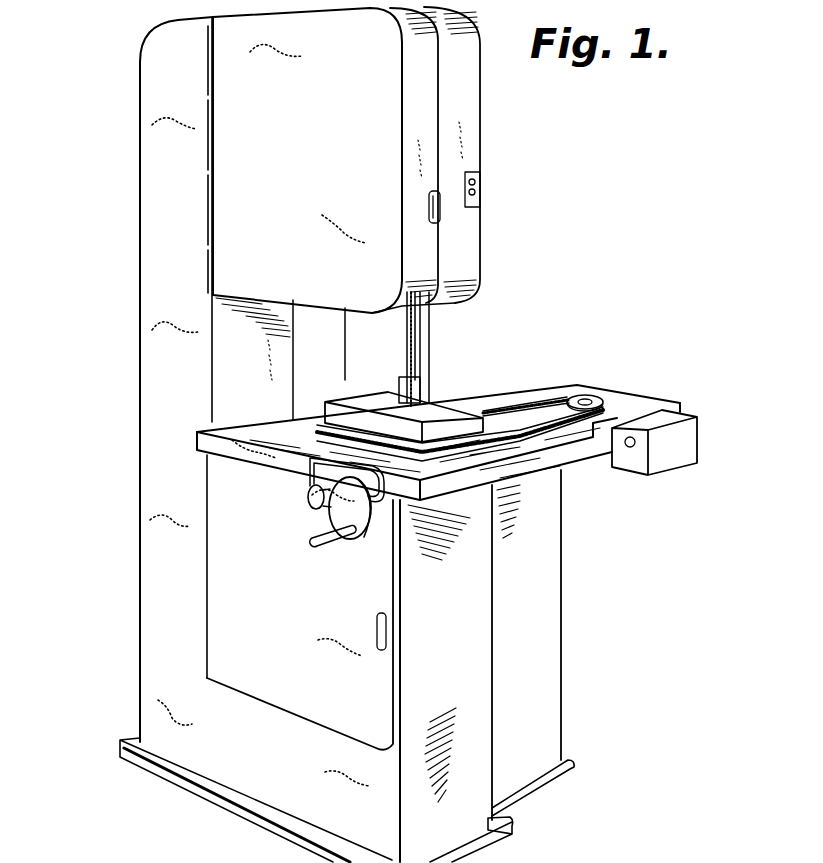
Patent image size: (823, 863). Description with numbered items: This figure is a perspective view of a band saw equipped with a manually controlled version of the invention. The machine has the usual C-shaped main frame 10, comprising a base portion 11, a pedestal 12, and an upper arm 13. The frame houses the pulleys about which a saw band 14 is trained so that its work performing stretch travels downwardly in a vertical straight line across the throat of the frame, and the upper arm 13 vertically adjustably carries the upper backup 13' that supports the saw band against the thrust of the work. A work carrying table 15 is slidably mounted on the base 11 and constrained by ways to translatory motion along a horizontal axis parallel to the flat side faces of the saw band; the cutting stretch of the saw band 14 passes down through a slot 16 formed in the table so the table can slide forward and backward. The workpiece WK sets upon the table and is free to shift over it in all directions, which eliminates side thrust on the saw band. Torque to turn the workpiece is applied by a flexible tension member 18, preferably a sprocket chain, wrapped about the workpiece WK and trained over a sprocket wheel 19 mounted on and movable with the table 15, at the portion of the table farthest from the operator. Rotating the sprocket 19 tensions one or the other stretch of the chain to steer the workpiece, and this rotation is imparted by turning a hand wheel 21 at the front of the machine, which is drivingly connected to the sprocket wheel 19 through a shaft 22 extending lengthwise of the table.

The main frame 10 is at (118, 374).
The base portion 11 is at (268, 759).
The pedestal 12 is at (177, 386).
The upper arm 13 is at (346, 213).
The upper backup 13' is at (443, 349).
The saw band 14 is at (408, 333).
The work carrying table 15 is at (628, 403).
The slot 16 is at (308, 455).
The flexible tension member 18 is at (519, 402).
The sprocket wheel 19 is at (591, 402).
The hand wheel 21 is at (342, 518).
The shaft 22 is at (390, 505).
The workpiece WK is at (446, 406).